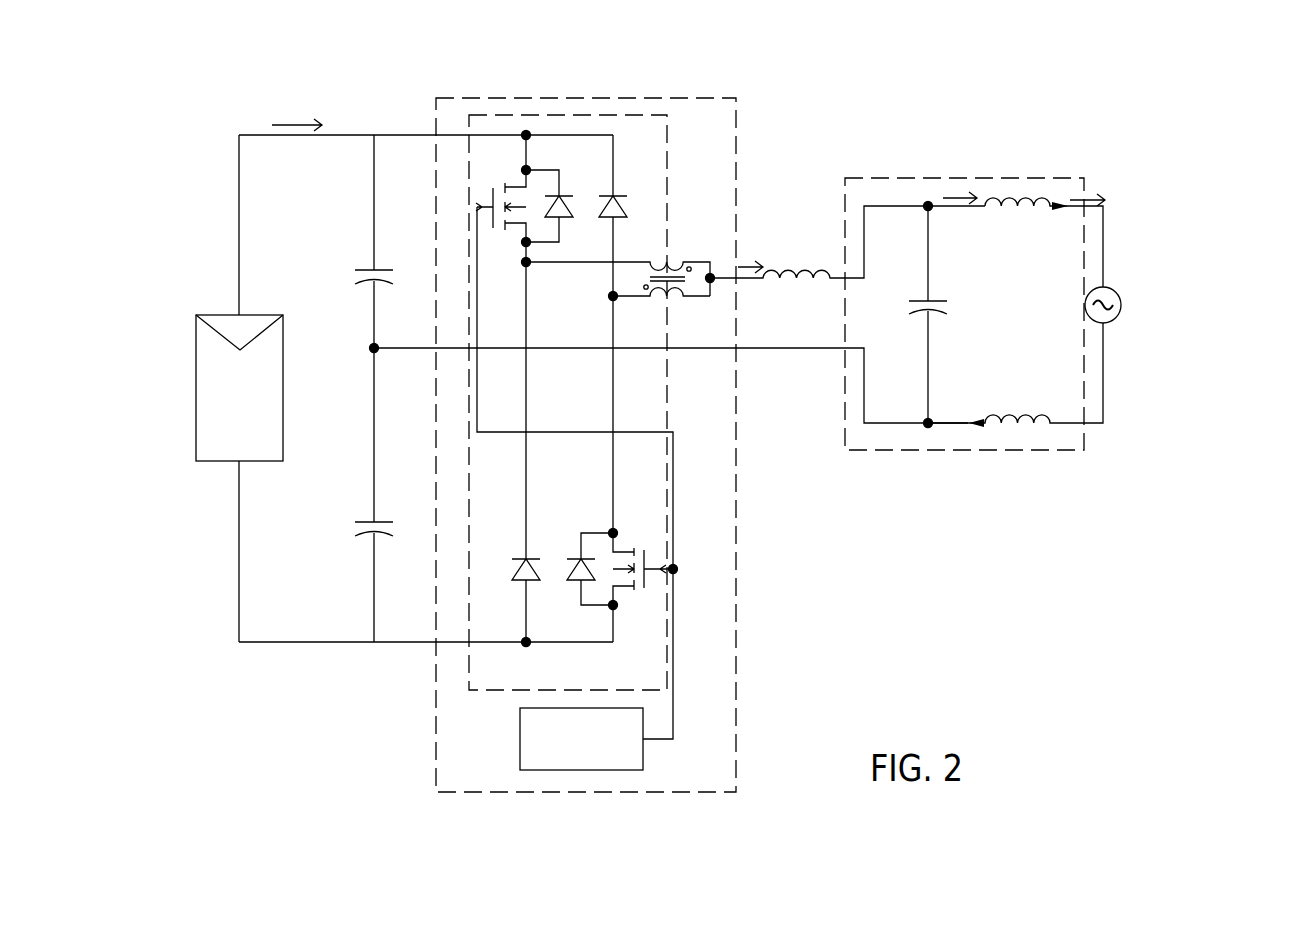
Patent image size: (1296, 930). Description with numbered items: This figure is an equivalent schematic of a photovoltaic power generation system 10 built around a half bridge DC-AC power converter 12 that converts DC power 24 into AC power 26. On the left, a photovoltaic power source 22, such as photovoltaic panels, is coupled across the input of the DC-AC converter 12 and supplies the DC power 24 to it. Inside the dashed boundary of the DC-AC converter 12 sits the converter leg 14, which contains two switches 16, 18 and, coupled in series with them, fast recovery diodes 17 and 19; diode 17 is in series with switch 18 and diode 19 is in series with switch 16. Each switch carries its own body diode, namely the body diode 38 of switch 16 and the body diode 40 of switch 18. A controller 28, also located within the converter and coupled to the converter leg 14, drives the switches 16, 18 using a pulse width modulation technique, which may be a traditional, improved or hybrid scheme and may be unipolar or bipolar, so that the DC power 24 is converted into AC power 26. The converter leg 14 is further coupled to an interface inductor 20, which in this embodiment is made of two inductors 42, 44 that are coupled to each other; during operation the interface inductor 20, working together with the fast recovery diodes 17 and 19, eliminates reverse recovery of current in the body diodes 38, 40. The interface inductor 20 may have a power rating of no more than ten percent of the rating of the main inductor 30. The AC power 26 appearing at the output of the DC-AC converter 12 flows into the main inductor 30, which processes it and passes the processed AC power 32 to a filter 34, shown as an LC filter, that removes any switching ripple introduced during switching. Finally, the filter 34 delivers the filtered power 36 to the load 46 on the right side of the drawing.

The photovoltaic power generation system 10 is at (1196, 75).
The half bridge DC-AC power converter 12 is at (690, 98).
The converter leg 14 is at (565, 115).
The switch 16 is at (518, 230).
The fast recovery diode 17 is at (617, 206).
The switch 18 is at (620, 554).
The fast recovery diode 19 is at (516, 560).
The interface inductor 20 is at (713, 283).
The photovoltaic power source 22 is at (256, 315).
The DC power 24 is at (297, 124).
The AC power 26 is at (758, 262).
The controller 28 is at (520, 748).
The main inductor 30 is at (806, 268).
The processed AC power 32 is at (953, 197).
The filter 34 is at (870, 178).
The filtered power 36 is at (1089, 197).
The body diode 38 is at (566, 204).
The body diode 40 is at (571, 584).
The inductor 42 is at (683, 263).
The inductor 44 is at (661, 297).
The load 46 is at (1122, 297).